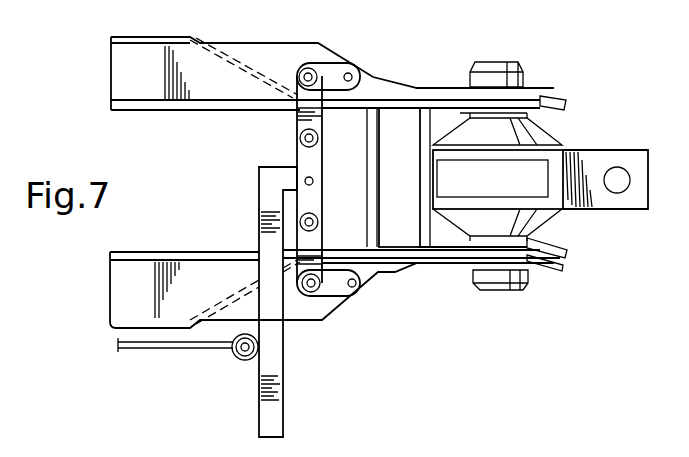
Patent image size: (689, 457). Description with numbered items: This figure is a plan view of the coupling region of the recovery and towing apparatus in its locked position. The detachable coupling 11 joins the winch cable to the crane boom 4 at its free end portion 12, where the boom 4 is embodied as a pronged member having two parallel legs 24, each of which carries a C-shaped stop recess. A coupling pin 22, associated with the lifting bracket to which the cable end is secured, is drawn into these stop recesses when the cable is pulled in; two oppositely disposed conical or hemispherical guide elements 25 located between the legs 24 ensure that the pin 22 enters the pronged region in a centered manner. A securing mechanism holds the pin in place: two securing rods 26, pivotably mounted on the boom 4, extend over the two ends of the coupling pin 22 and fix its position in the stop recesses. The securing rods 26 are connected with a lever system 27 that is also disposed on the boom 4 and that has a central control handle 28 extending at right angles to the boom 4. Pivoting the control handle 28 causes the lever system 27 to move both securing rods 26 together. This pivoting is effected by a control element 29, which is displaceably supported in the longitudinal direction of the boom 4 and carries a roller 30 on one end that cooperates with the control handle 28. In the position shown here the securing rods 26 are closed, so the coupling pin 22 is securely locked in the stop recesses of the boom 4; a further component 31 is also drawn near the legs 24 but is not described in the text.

The boom 4 is at (280, 52).
The detachable coupling 11 is at (572, 111).
The free end portion 12 is at (328, 323).
The coupling pin 22 is at (517, 288).
The legs 24 is at (442, 102).
The guide elements 25 is at (537, 137).
The securing rods 26 is at (540, 93).
The lever system 27 is at (270, 156).
The control handle 28 is at (277, 415).
The control element 29 is at (175, 347).
The roller 30 is at (240, 358).
The column 31 is at (400, 240).